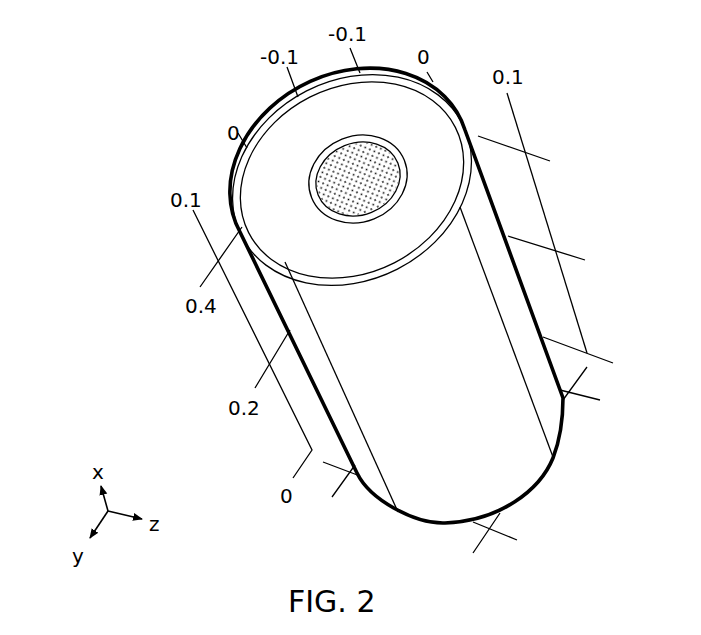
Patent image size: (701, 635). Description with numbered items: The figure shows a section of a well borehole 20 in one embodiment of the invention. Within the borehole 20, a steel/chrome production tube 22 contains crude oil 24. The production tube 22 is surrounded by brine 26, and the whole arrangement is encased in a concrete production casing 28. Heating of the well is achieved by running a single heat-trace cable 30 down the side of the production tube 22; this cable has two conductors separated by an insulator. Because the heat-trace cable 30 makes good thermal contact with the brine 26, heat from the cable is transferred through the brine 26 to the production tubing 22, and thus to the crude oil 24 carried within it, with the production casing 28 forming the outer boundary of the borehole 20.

The well borehole 20 is at (125, 186).
The production tube 22 is at (313, 165).
The crude oil 24 is at (360, 162).
The brine 26 is at (425, 135).
The concrete production casing 28 is at (470, 177).
The heat-trace cable 30 is at (320, 213).